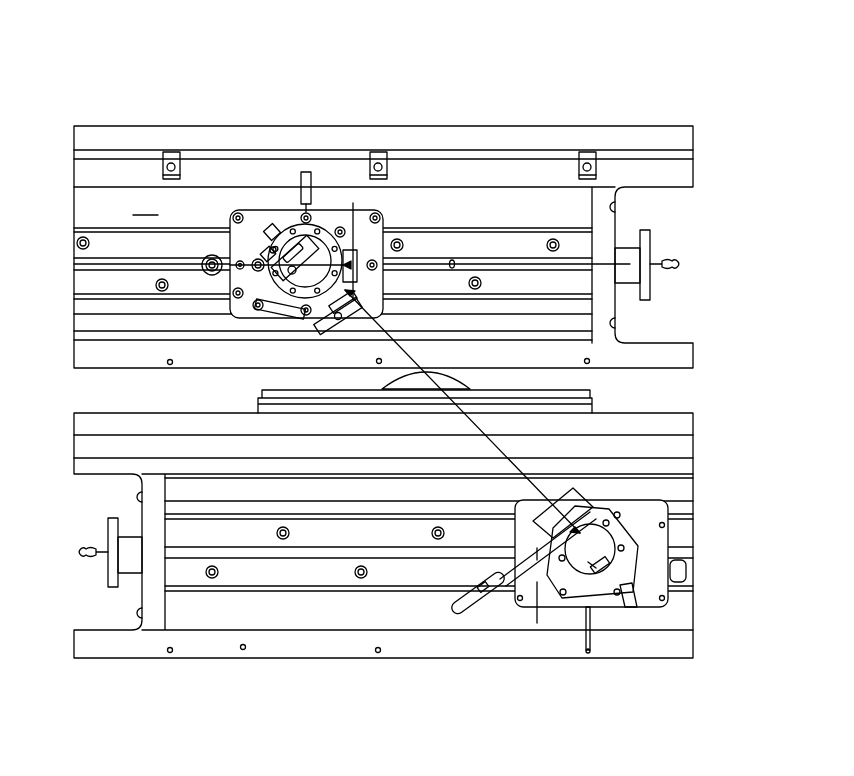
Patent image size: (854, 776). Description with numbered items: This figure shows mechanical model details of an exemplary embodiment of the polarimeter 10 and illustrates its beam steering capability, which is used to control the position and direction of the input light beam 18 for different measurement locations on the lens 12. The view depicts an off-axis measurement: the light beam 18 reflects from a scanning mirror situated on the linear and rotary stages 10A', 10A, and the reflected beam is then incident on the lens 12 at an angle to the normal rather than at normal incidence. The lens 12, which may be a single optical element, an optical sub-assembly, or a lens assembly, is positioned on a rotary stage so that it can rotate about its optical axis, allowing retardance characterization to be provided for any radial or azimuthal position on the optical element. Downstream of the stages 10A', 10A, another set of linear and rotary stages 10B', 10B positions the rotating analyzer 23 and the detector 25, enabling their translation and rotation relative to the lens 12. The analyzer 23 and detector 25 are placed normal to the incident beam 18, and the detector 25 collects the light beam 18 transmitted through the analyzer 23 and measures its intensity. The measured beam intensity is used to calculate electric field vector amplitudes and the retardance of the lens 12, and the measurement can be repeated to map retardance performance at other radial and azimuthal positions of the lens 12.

The polarimeter 10 is at (146, 116).
The rotary stage 10A is at (313, 205).
The linear stage 10A' is at (221, 198).
The rotary stage 10B is at (596, 554).
The linear stage 10B' is at (633, 576).
The lens 12 is at (470, 375).
The light beam 18 is at (476, 278).
The analyzer 23 is at (538, 558).
The detector 25 is at (593, 573).